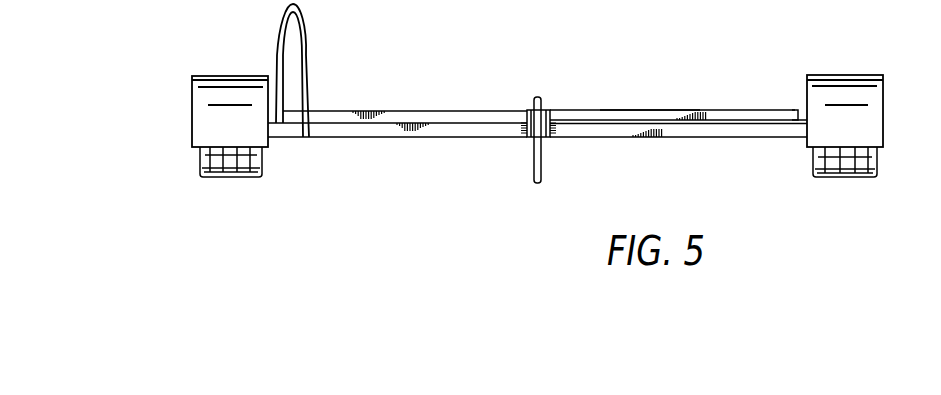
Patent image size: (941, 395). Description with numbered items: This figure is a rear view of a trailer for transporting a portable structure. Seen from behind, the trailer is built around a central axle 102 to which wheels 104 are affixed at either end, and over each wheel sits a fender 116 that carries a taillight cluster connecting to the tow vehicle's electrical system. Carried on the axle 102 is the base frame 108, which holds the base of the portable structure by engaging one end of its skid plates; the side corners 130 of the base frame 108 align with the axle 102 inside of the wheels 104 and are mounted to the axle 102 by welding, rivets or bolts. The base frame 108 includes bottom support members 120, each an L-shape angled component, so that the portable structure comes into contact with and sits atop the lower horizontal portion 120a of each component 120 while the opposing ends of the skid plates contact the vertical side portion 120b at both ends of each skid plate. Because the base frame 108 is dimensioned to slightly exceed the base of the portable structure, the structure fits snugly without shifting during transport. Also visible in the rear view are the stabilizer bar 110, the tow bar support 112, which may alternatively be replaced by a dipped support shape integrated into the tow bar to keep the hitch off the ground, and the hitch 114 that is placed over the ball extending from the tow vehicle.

The central axle 102 is at (595, 130).
The wheels 104 is at (242, 177).
The base frame 108 is at (798, 110).
The stabilizer bar 110 is at (308, 32).
The tow bar support 112 is at (537, 183).
The hitch 114 is at (537, 100).
The fenders 116 is at (227, 75).
The bottom support members 120 is at (645, 110).
The lower horizontal portion 120a is at (403, 115).
The vertical side portion 120b is at (590, 115).
The side corners 130 is at (275, 130).